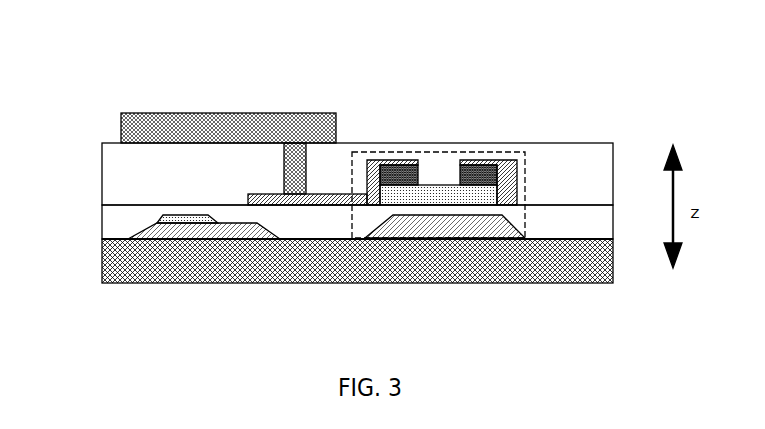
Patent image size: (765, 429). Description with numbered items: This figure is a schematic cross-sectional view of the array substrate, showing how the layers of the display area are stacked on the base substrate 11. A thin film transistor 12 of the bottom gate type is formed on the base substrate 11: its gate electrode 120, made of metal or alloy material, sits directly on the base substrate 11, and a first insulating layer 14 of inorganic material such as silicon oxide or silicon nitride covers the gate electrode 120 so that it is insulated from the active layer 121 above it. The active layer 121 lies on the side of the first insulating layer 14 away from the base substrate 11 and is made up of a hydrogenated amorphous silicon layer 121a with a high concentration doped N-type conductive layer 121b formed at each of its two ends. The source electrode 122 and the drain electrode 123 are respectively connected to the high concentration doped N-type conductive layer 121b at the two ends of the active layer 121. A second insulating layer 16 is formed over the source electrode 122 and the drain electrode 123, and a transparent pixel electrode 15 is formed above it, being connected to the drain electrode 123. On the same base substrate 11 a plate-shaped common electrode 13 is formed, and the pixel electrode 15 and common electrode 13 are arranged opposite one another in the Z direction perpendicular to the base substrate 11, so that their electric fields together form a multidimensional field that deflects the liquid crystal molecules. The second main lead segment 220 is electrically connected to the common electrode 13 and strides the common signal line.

The base substrate 11 is at (102, 258).
The thin film transistor 12 is at (463, 232).
The common electrode 13 is at (237, 229).
The first insulating layer 14 is at (102, 222).
The pixel electrode 15 is at (225, 113).
The second insulating layer 16 is at (102, 186).
The gate electrode 120 is at (472, 230).
The active layer 121 is at (437, 256).
The hydrogenated amorphous silicon layer 121a is at (420, 186).
The high concentration doped N-type conductive layer 121b is at (462, 178).
The source electrode 122 is at (498, 161).
The drain electrode 123 is at (402, 161).
The second main lead segment 220 is at (203, 221).